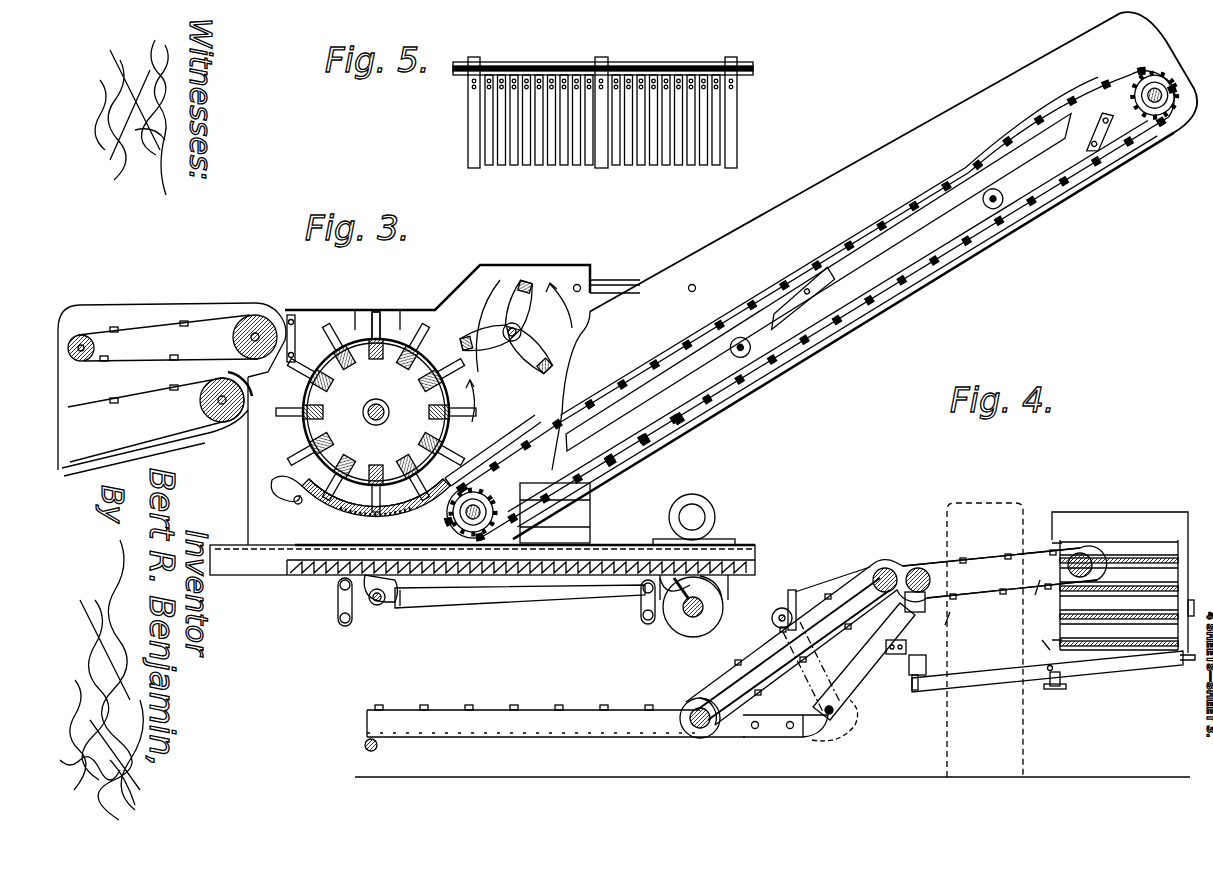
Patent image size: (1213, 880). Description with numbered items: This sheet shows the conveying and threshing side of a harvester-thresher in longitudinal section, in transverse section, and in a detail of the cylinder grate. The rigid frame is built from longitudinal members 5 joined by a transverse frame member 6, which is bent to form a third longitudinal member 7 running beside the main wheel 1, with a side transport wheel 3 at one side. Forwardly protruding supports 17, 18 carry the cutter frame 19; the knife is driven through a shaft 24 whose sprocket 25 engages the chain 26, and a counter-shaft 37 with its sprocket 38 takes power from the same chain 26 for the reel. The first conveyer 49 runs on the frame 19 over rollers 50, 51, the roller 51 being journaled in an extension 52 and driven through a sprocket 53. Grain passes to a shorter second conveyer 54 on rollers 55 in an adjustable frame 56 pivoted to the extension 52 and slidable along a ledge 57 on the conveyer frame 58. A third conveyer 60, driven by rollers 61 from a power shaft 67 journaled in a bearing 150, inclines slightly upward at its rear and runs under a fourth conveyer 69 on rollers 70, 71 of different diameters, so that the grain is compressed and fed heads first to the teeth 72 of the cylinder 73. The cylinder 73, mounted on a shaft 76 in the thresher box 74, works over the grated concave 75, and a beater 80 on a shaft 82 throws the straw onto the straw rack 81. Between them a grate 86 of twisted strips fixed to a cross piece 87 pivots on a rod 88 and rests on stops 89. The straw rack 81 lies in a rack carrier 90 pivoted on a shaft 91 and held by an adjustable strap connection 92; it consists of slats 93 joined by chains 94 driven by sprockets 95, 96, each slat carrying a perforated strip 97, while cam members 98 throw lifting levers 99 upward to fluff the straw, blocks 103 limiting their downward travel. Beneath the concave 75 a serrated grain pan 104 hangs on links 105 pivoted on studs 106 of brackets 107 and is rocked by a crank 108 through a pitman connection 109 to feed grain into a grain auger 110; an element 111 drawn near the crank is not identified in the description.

In FIG. 4, the main wheel 1 is at (1008, 505).
In FIG. 3, the side transport wheel 3 is at (760, 560).
In FIG. 4, the side transport wheel 3 is at (1192, 512).
In FIG. 4, the longitudinally disposed frame members 5 is at (915, 690).
In FIG. 4, the transversely extending frame member 6 is at (1125, 668).
In FIG. 4, the third longitudinally extending member 7 is at (1180, 662).
In FIG. 4, the longitudinally extending support 17 is at (365, 745).
In FIG. 4, the second forwardly protruding supporting member 18 is at (886, 647).
In FIG. 4, the transversely disposed cutter frame 19 is at (750, 738).
In FIG. 4, the shaft 24 is at (829, 715).
In FIG. 4, the sprocket 25 is at (848, 713).
In FIG. 4, the chain 26 is at (812, 588).
In FIG. 4, the counter-shaft 37 is at (798, 585).
In FIG. 4, the sprocket 38 is at (771, 618).
In FIG. 4, the first apron or conveyer 49 is at (528, 710).
In FIG. 4, the rollers 50 is at (698, 728).
In FIG. 4, the roller 51 is at (885, 568).
In FIG. 4, the extension 52 is at (885, 650).
In FIG. 4, the sprocket 53 is at (874, 570).
In FIG. 4, the second transversely extending conveyer 54 is at (975, 562).
In FIG. 4, the rollers 55 is at (918, 568).
In FIG. 4, the adjustable frame 56 is at (1000, 590).
In FIG. 4, the ledge 57 is at (1055, 605).
In FIG. 3, the conveyer frame 58 is at (130, 318).
In FIG. 4, the conveyer frame 58 is at (1048, 652).
In FIG. 3, the third conveyer 60 is at (84, 470).
In FIG. 4, the third conveyer 60 is at (1115, 628).
In FIG. 3, the rollers 61 is at (215, 420).
In FIG. 3, the power shaft 67 is at (705, 518).
In FIG. 3, the fourth conveyer 69 is at (150, 328).
In FIG. 4, the fourth conveyer 69 is at (1130, 550).
In FIG. 3, the roller 70 is at (80, 335).
In FIG. 3, the roller 71 is at (252, 314).
In FIG. 3, the cylinder teeth 72 is at (345, 340).
In FIG. 3, the thresher cylinder 73 is at (377, 335).
In FIG. 3, the thresher framework or box 74 is at (408, 318).
In FIG. 4, the thresher framework or box 74 is at (1094, 518).
In FIG. 3, the grated concave 75 is at (322, 528).
In FIG. 3, the cylinder shaft 76 is at (272, 482).
In FIG. 3, the beater 80 is at (500, 278).
In FIG. 3, the straw rack 81 is at (660, 342).
In FIG. 3, the beater shaft 82 is at (505, 328).
In FIG. 5, the grate 86 is at (664, 168).
In FIG. 3, the grate 86 is at (628, 456).
In FIG. 5, the cross piece 87 is at (468, 84).
In FIG. 3, the cross piece 87 is at (600, 472).
In FIG. 5, the rod or shaft 88 is at (753, 65).
In FIG. 3, the rod or shaft 88 is at (582, 487).
In FIG. 3, the stops 89 is at (655, 440).
In FIG. 3, the rack carrier 90 is at (935, 128).
In FIG. 3, the shaft 91 is at (500, 514).
In FIG. 3, the adjustable strap connection 92 is at (615, 288).
In FIG. 3, the slats 93 is at (748, 358).
In FIG. 3, the chains 94 is at (855, 345).
In FIG. 3, the sprocket 95 is at (575, 500).
In FIG. 3, the sprocket 96 is at (1162, 112).
In FIG. 3, the perforated metal strip 97 is at (962, 285).
In FIG. 3, the rotating cam members 98 is at (741, 358).
In FIG. 3, the rack lifting levers 99 is at (697, 330).
In FIG. 3, the blocks or stops 103 is at (790, 300).
In FIG. 3, the grain pan 104 is at (315, 577).
In FIG. 3, the links 105 is at (338, 600).
In FIG. 3, the studs 106 is at (342, 622).
In FIG. 3, the brackets 107 is at (355, 606).
In FIG. 3, the crank 108 is at (382, 606).
In FIG. 3, the pitman connection 109 is at (515, 590).
In FIG. 3, the grain auger 110 is at (722, 598).
In FIG. 3, the crank pin 111 is at (692, 618).
In FIG. 3, the bearing 150 is at (705, 498).